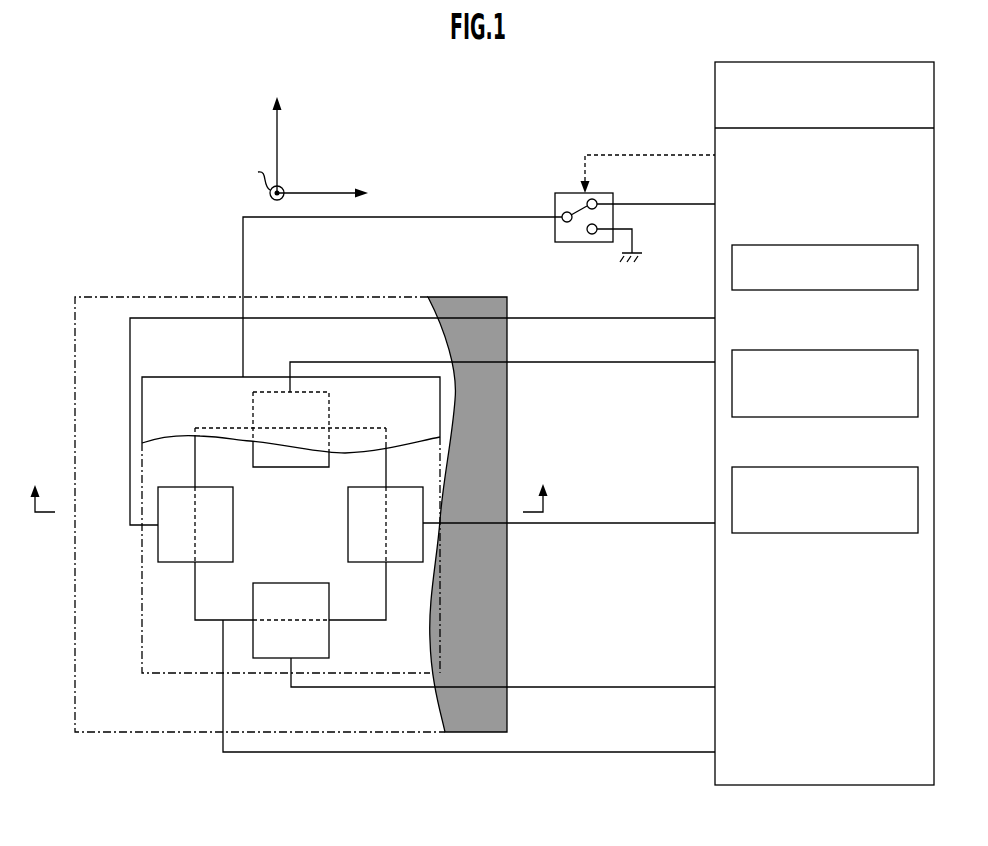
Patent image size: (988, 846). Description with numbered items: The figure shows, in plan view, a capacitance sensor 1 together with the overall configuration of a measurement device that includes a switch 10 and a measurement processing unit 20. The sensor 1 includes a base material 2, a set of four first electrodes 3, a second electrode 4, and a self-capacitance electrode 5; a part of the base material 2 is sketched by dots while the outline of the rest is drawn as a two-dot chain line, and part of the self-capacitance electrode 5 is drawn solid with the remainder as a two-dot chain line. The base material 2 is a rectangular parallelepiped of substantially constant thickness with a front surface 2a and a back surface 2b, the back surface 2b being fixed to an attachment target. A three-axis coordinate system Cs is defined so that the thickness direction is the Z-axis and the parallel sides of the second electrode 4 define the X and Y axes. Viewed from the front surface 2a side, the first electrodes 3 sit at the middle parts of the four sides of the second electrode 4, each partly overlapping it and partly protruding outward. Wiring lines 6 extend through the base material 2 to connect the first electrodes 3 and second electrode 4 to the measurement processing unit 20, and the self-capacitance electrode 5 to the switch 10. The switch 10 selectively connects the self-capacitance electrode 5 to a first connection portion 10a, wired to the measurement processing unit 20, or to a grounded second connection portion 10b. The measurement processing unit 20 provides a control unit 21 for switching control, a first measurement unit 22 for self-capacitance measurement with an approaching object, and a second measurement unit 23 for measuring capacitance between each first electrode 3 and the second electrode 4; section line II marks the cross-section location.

The capacitance sensor 1 is at (116, 272).
The base material 2 is at (507, 428).
The front surface 2a is at (484, 400).
The back surface 2b is at (485, 703).
The first electrode 3 is at (363, 496).
The second electrode 4 is at (343, 428).
The self-capacitance electrode 5 is at (175, 377).
The wiring line 6 is at (422, 453).
The switch 10 is at (551, 180).
The first connection portion 10a is at (598, 202).
The second connection portion 10b is at (588, 243).
The measurement processing unit 20 is at (790, 62).
The control unit 21 is at (797, 245).
The first measurement unit 22 is at (797, 350).
The second measurement unit 23 is at (797, 467).
The coordinate system Cs is at (317, 146).
The section line II is at (290, 487).